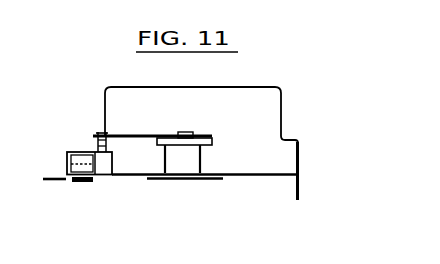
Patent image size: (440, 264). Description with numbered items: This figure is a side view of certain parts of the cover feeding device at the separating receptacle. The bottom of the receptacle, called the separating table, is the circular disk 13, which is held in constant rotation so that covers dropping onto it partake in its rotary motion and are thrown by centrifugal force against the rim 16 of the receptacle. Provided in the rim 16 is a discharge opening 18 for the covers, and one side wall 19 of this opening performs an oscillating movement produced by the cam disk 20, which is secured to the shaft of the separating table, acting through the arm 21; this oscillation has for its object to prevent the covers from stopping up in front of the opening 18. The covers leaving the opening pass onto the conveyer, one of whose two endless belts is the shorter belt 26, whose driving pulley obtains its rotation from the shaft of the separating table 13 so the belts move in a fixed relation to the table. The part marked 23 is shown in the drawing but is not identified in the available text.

The circular disk 13 is at (231, 176).
The rim 16 is at (273, 165).
The discharge opening 18 is at (90, 182).
The side wall 19 is at (102, 168).
The cam disk 20 is at (187, 142).
The arm 21 is at (140, 137).
The contact strip 23 is at (57, 182).
The endless belt 26 is at (80, 182).